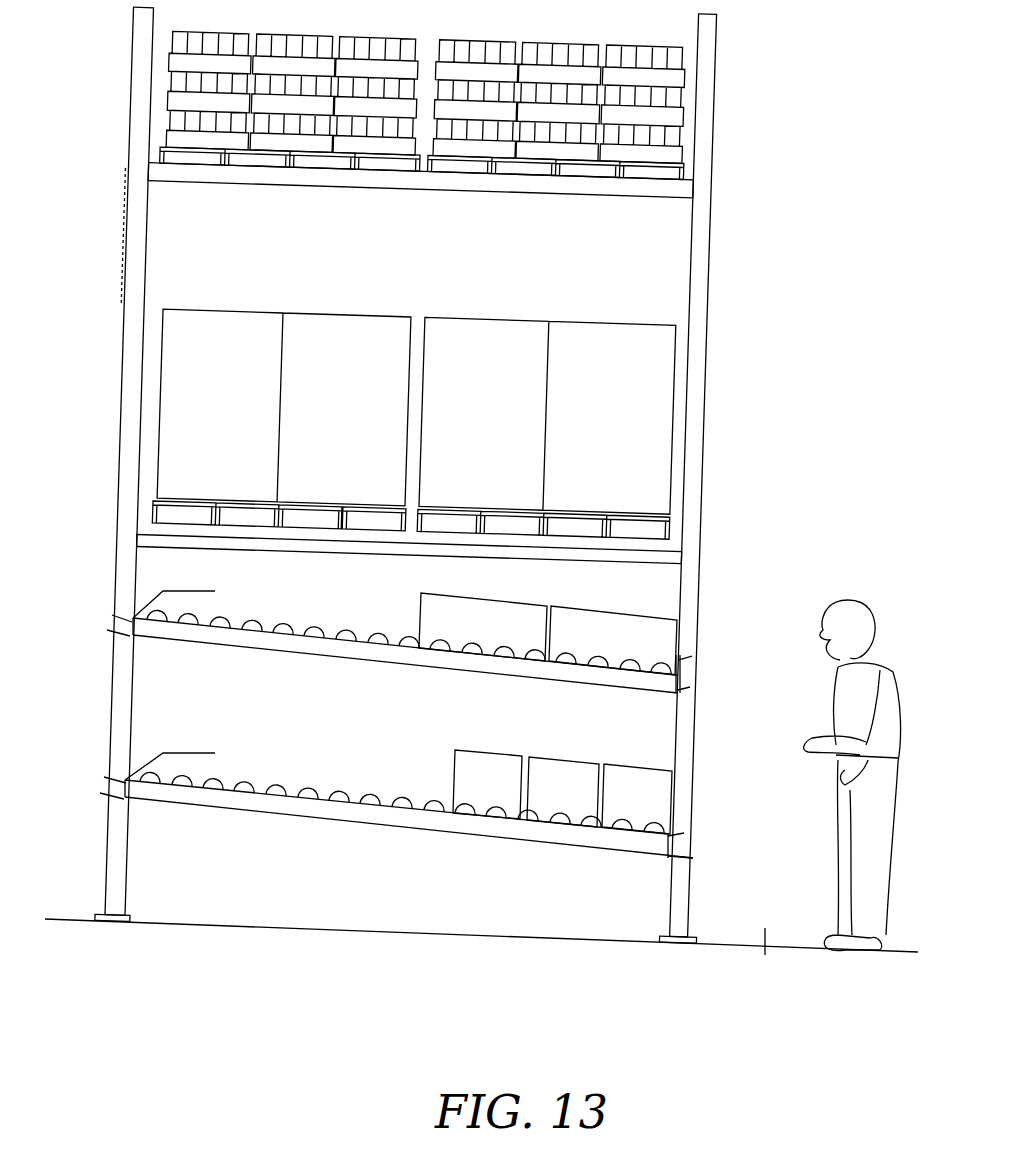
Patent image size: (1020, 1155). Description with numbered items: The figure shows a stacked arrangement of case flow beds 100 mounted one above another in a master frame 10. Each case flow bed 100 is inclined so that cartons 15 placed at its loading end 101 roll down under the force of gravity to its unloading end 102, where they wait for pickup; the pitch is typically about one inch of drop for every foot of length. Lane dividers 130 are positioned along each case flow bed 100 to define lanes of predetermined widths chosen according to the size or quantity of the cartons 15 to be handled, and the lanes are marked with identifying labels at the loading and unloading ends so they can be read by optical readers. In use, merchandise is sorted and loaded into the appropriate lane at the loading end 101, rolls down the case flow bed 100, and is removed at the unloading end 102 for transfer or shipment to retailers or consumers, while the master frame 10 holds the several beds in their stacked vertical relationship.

The master frame 10 is at (720, 460).
The carton 15 is at (577, 741).
The case flow bed 100 is at (430, 673).
The loading end 101 is at (103, 628).
The unloading end 102 is at (710, 658).
The lane divider 130 is at (196, 582).